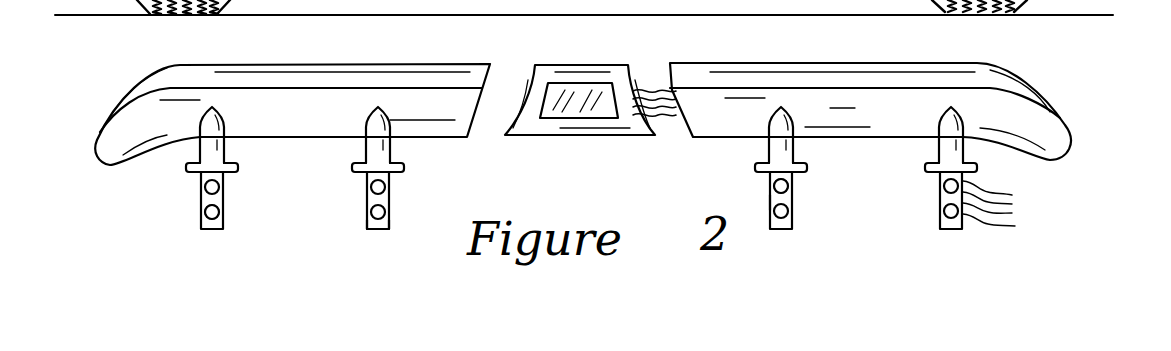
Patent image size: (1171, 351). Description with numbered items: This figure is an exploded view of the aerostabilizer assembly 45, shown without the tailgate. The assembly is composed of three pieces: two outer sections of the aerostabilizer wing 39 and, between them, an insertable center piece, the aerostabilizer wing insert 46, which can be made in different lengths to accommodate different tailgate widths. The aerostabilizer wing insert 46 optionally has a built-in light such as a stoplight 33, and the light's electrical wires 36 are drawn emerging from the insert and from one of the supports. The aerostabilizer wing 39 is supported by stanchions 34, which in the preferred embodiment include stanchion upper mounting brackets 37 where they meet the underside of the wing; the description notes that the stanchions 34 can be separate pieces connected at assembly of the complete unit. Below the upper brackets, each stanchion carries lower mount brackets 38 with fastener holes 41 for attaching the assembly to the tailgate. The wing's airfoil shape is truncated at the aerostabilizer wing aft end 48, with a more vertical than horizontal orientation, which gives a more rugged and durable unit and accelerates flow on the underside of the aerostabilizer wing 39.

The stoplight 33 is at (587, 93).
The stanchions 34 is at (220, 147).
The electrical wires 36 is at (660, 130).
The stanchion upper mounting bracket 37 is at (395, 158).
The lower mount brackets 38 is at (220, 203).
The aerostabilizer wing 39 is at (347, 121).
The fastener holes 41 is at (377, 222).
The aerostabilizer assembly 45 is at (937, 62).
The aerostabilizer wing insert 46 is at (537, 70).
The aerostabilizer wing aft end 48 is at (782, 83).